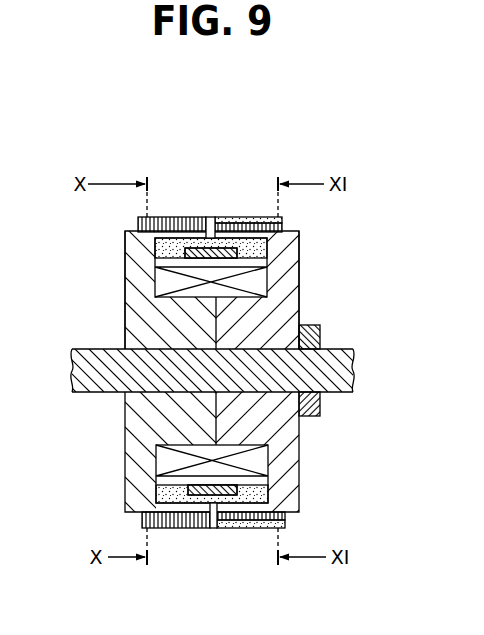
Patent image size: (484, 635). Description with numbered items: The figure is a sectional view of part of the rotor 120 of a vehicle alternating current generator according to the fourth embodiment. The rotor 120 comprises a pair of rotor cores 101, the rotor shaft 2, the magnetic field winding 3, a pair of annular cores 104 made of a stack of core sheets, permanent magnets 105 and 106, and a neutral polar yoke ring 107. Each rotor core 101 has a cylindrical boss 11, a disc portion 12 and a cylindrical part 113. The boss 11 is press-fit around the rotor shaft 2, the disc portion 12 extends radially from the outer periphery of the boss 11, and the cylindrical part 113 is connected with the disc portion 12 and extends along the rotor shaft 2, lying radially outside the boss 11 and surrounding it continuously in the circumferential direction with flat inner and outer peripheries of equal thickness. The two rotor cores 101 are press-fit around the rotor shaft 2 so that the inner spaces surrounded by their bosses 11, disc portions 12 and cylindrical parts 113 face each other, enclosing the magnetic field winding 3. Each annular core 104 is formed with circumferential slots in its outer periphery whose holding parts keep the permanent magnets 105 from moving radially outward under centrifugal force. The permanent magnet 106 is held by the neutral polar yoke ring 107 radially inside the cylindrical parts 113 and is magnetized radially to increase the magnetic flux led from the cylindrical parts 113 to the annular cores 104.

The rotor shaft 2 is at (86, 348).
The magnetic field winding 3 is at (253, 457).
The cylindrical boss 11 is at (125, 320).
The disc portion 12 is at (150, 257).
The rotor core 101 is at (122, 289).
The annular core 104 is at (188, 217).
The permanent magnet 105 is at (230, 217).
The permanent magnet 106 is at (152, 243).
The neutral polar yoke ring 107 is at (213, 503).
The cylindrical part 113 is at (166, 217).
The rotor 120 is at (332, 242).